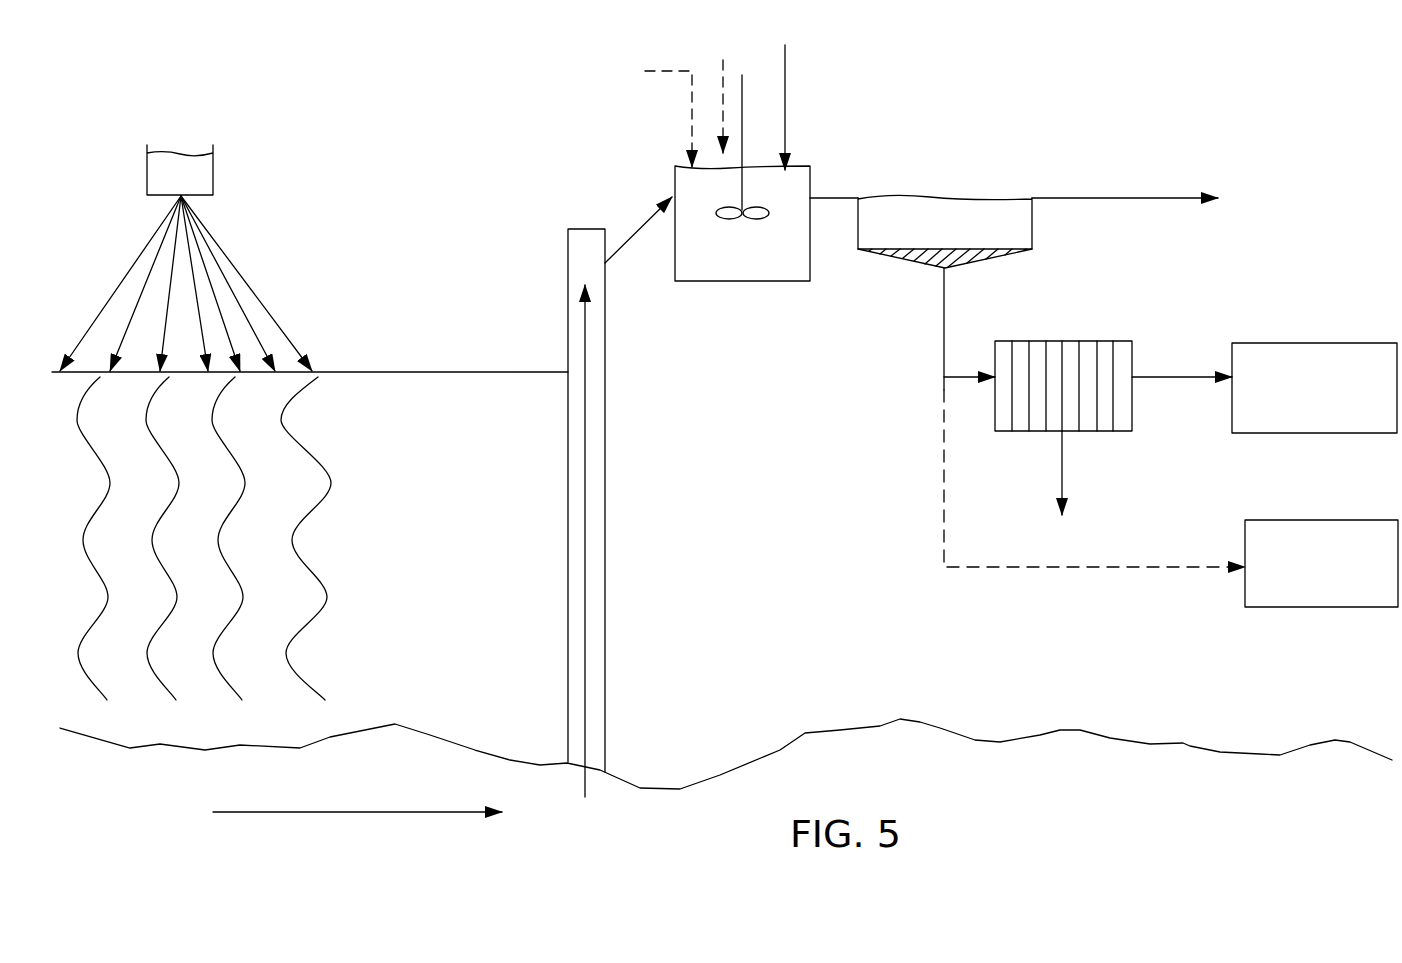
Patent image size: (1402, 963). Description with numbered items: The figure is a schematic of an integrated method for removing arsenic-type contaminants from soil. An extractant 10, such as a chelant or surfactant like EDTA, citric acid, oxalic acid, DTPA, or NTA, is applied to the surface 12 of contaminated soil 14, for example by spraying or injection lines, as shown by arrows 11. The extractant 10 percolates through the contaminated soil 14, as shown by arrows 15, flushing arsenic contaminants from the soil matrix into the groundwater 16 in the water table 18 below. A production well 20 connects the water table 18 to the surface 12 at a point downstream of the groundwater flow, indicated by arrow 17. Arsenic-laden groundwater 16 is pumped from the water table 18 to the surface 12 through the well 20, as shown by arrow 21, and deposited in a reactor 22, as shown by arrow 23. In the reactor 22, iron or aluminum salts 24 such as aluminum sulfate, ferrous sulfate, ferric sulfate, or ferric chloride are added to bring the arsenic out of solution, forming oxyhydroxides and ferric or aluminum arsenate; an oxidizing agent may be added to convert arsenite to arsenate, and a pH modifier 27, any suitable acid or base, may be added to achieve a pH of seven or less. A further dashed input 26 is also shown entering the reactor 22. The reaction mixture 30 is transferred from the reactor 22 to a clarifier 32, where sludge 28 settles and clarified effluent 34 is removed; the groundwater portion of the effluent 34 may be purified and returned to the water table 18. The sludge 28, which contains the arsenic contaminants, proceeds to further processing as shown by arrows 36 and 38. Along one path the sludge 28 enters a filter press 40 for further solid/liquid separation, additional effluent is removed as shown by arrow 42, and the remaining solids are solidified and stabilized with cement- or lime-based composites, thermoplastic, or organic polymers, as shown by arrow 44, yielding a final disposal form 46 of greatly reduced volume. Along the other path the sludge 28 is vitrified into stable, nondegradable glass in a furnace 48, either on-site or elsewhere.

The extractant 10 is at (205, 173).
The arrows 11 is at (268, 265).
The surface 12 is at (390, 372).
The contaminated soil 14 is at (424, 460).
The arrows 15 is at (340, 590).
The groundwater 16 is at (197, 796).
The arrow 17 is at (352, 812).
The water table 18 is at (135, 752).
The production well 20 is at (632, 460).
The arrow 21 is at (585, 572).
The reactor 22 is at (748, 282).
The arrow 23 is at (630, 262).
The iron or aluminum salts 24 is at (786, 92).
The optional additive input 26 is at (720, 88).
The pH modifier 27 is at (649, 112).
The sludge 28 is at (975, 255).
The reaction mixture 30 is at (797, 196).
The clarifier 32 is at (1032, 235).
The clarified effluent 34 is at (1147, 198).
The arrow 36 is at (960, 380).
The arrow 38 is at (940, 490).
The filter press 40 is at (1100, 340).
The arrow 42 is at (1065, 474).
The arrow 44 is at (1155, 380).
The final disposal form 46 is at (1314, 388).
The furnace 48 is at (1321, 563).